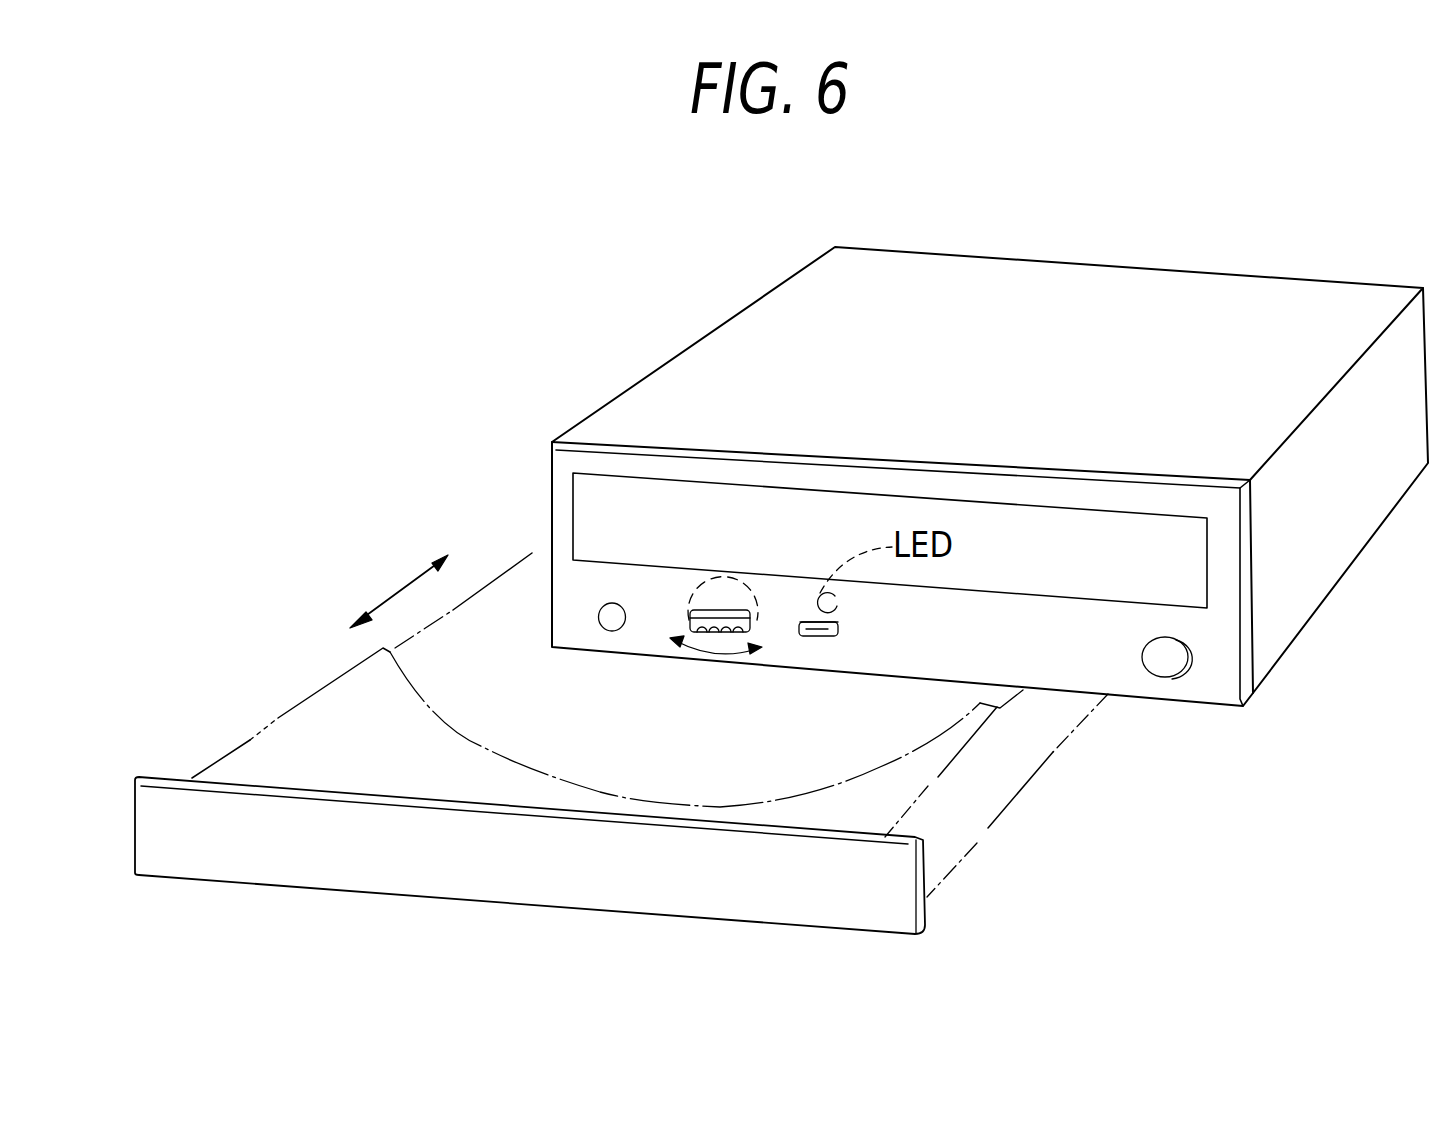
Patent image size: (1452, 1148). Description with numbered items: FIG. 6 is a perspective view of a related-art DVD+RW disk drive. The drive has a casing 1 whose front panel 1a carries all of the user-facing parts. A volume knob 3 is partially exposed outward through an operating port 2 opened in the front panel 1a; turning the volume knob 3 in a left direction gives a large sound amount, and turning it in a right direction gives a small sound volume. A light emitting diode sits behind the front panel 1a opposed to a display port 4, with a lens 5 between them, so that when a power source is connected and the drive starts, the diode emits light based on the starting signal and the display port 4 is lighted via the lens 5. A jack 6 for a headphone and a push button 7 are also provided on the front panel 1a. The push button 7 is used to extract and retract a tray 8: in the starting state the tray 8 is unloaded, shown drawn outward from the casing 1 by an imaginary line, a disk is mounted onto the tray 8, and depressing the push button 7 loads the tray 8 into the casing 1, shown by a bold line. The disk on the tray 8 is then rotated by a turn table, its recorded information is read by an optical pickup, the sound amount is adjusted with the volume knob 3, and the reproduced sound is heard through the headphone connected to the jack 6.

The casing 1 is at (667, 356).
The front panel 1a is at (562, 515).
The operating port 2 is at (715, 610).
The volume knob 3 is at (743, 582).
The display port 4 is at (808, 637).
The lens 5 is at (836, 625).
The jack 6 is at (612, 631).
The push button 7 is at (1172, 667).
The tray 8 is at (1090, 565).